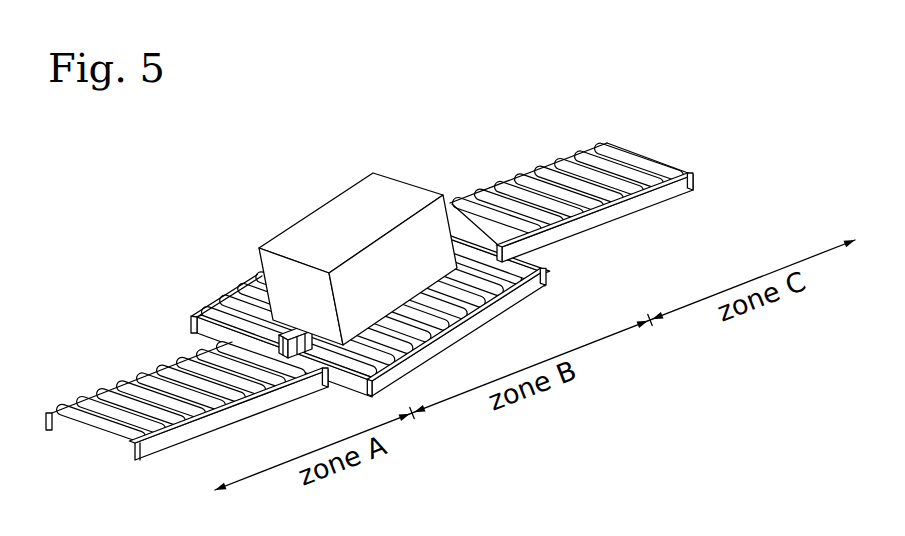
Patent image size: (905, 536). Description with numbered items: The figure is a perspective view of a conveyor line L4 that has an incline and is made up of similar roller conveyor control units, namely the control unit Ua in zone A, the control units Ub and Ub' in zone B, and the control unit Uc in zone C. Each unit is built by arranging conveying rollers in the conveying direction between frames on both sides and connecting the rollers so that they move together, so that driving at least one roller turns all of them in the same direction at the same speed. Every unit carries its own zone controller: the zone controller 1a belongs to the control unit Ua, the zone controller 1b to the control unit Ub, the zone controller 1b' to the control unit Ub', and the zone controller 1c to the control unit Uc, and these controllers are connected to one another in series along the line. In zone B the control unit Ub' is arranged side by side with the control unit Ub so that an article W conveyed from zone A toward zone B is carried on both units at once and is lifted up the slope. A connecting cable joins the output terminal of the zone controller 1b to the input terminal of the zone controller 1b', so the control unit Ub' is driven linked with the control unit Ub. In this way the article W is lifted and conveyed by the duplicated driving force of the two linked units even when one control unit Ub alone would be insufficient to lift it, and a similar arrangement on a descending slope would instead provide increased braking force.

The zone controller 1a is at (148, 360).
The zone controller 1b is at (361, 292).
The zone controller 1b' is at (456, 332).
The zone controller 1c is at (507, 160).
The control unit Ua is at (185, 385).
The control unit Ub is at (397, 303).
The control unit Ub' is at (485, 302).
The control unit Uc is at (571, 184).
The article W is at (361, 185).
The conveyor line L4 is at (665, 55).